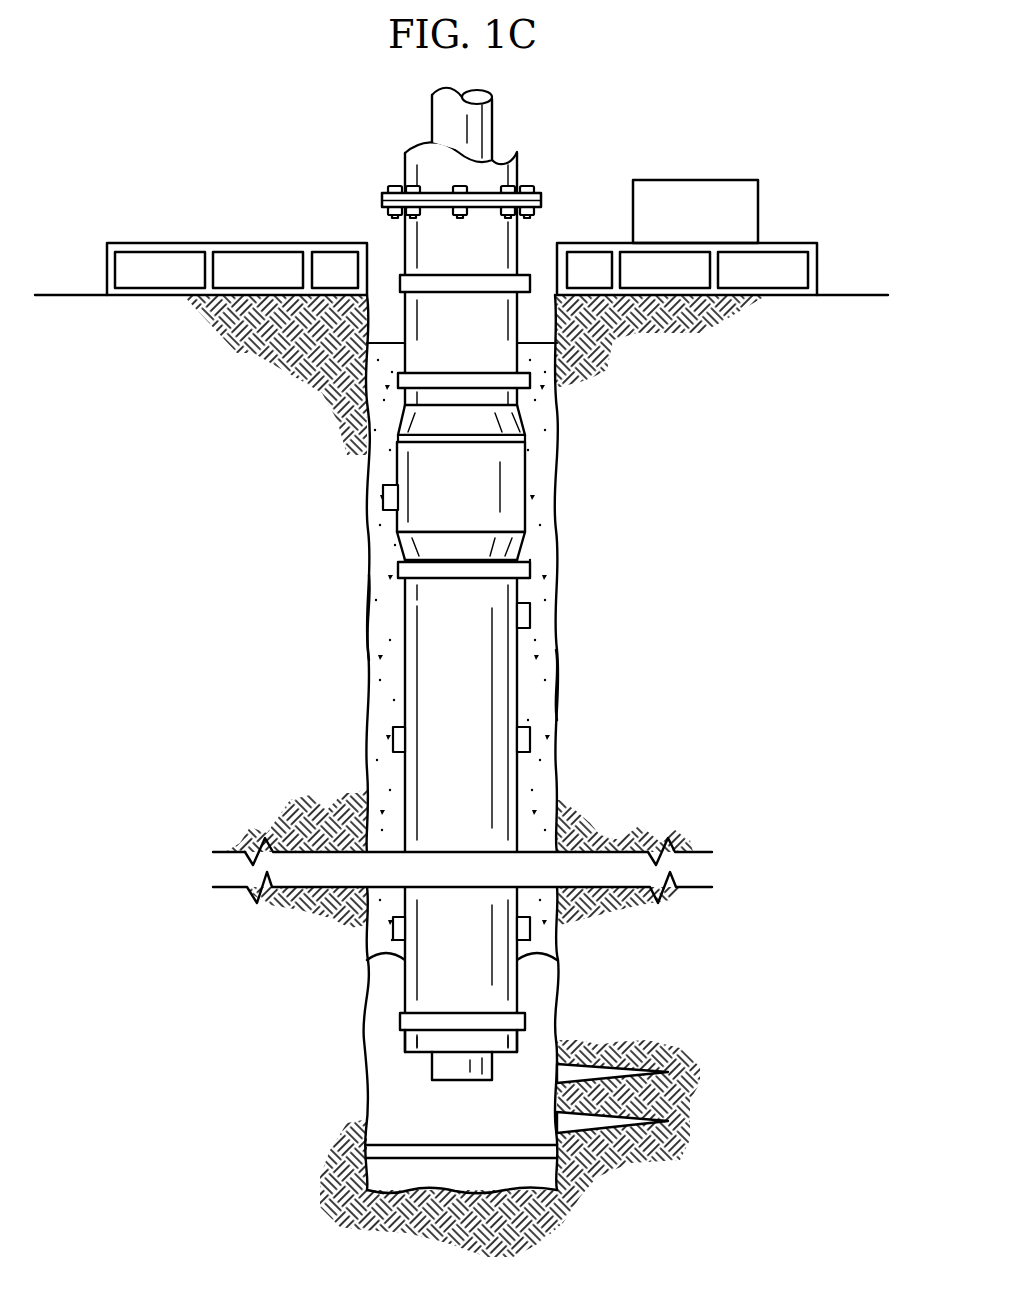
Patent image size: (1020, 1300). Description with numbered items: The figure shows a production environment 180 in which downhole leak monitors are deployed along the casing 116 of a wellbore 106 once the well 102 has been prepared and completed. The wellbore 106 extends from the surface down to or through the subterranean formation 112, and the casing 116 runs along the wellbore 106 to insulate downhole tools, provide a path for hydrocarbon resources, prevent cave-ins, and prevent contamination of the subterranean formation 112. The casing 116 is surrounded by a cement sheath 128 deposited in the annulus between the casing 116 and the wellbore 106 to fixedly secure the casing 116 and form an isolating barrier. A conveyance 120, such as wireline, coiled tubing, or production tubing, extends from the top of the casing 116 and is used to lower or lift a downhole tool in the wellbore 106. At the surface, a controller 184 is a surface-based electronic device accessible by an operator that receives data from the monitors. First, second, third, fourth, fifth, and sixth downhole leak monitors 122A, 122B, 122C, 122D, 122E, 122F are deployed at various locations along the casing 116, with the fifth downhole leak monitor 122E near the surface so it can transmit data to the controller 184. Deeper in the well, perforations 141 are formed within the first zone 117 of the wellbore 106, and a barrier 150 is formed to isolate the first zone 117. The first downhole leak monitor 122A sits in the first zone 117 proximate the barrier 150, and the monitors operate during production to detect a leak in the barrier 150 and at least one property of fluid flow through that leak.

The production environment 180 is at (222, 56).
The well 102 is at (328, 172).
The conveyance 120 is at (431, 122).
The casing 116 is at (405, 238).
The controller 184 is at (697, 180).
The subterranean formation 112 is at (270, 418).
The wellbore 106 is at (368, 576).
The cement sheath 128 is at (373, 618).
The first zone 117 is at (521, 680).
The first downhole leak monitor 122A is at (530, 927).
The second downhole leak monitor 122B is at (373, 928).
The third downhole leak monitor 122C is at (530, 740).
The fourth downhole leak monitor 122D is at (393, 740).
The fifth downhole leak monitor 122E is at (532, 615).
The sixth downhole leak monitor 122F is at (383, 497).
The perforations 141 is at (596, 1066).
The barrier 150 is at (420, 1145).